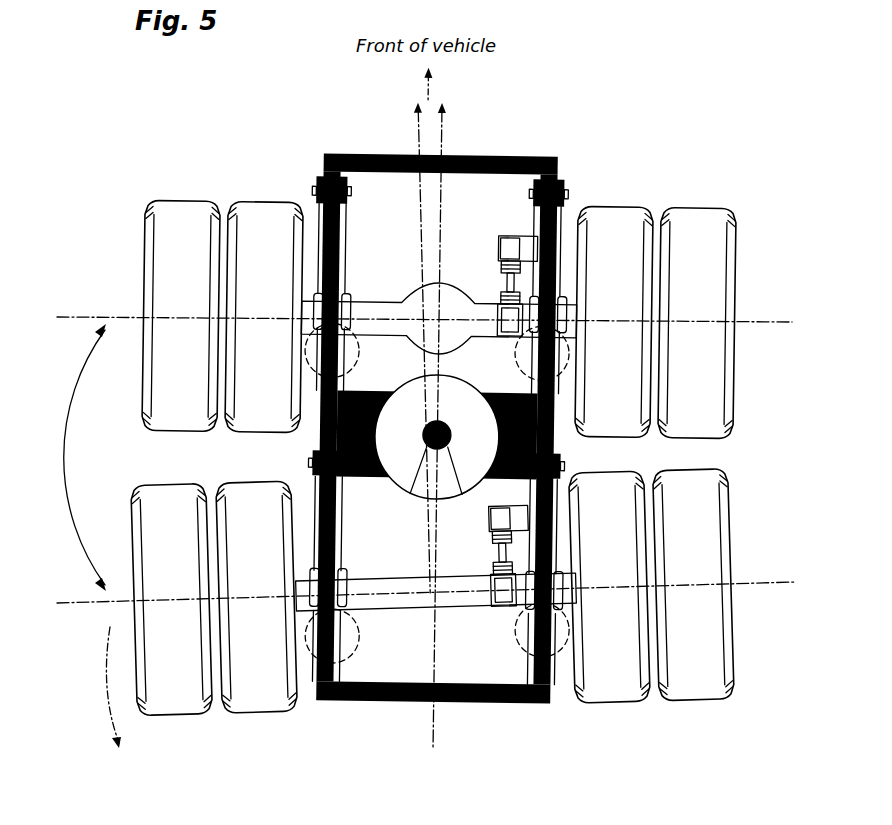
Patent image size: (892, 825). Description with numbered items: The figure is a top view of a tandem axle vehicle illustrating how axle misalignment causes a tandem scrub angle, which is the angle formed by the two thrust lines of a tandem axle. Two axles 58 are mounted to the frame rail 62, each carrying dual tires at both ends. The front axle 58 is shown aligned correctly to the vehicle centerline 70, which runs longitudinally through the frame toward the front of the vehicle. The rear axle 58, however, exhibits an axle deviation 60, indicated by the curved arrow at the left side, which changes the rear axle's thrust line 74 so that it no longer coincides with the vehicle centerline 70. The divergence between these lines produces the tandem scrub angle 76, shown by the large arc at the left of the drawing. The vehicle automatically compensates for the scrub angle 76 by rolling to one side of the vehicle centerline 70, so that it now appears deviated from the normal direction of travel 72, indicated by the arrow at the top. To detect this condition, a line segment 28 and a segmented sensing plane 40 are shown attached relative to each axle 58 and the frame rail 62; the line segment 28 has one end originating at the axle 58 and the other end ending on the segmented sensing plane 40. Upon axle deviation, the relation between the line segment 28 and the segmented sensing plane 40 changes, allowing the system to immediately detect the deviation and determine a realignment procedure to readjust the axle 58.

The line segment 28 is at (505, 284).
The segmented sensing plane 40 is at (498, 246).
The axle 58 is at (404, 338).
The axle deviation 60 is at (110, 690).
The frame rail 62 is at (556, 163).
The vehicle centerline 70 is at (446, 125).
The normal direction of travel 72 is at (441, 85).
The thrust line 74 is at (418, 132).
The tandem scrub angle 76 is at (62, 440).